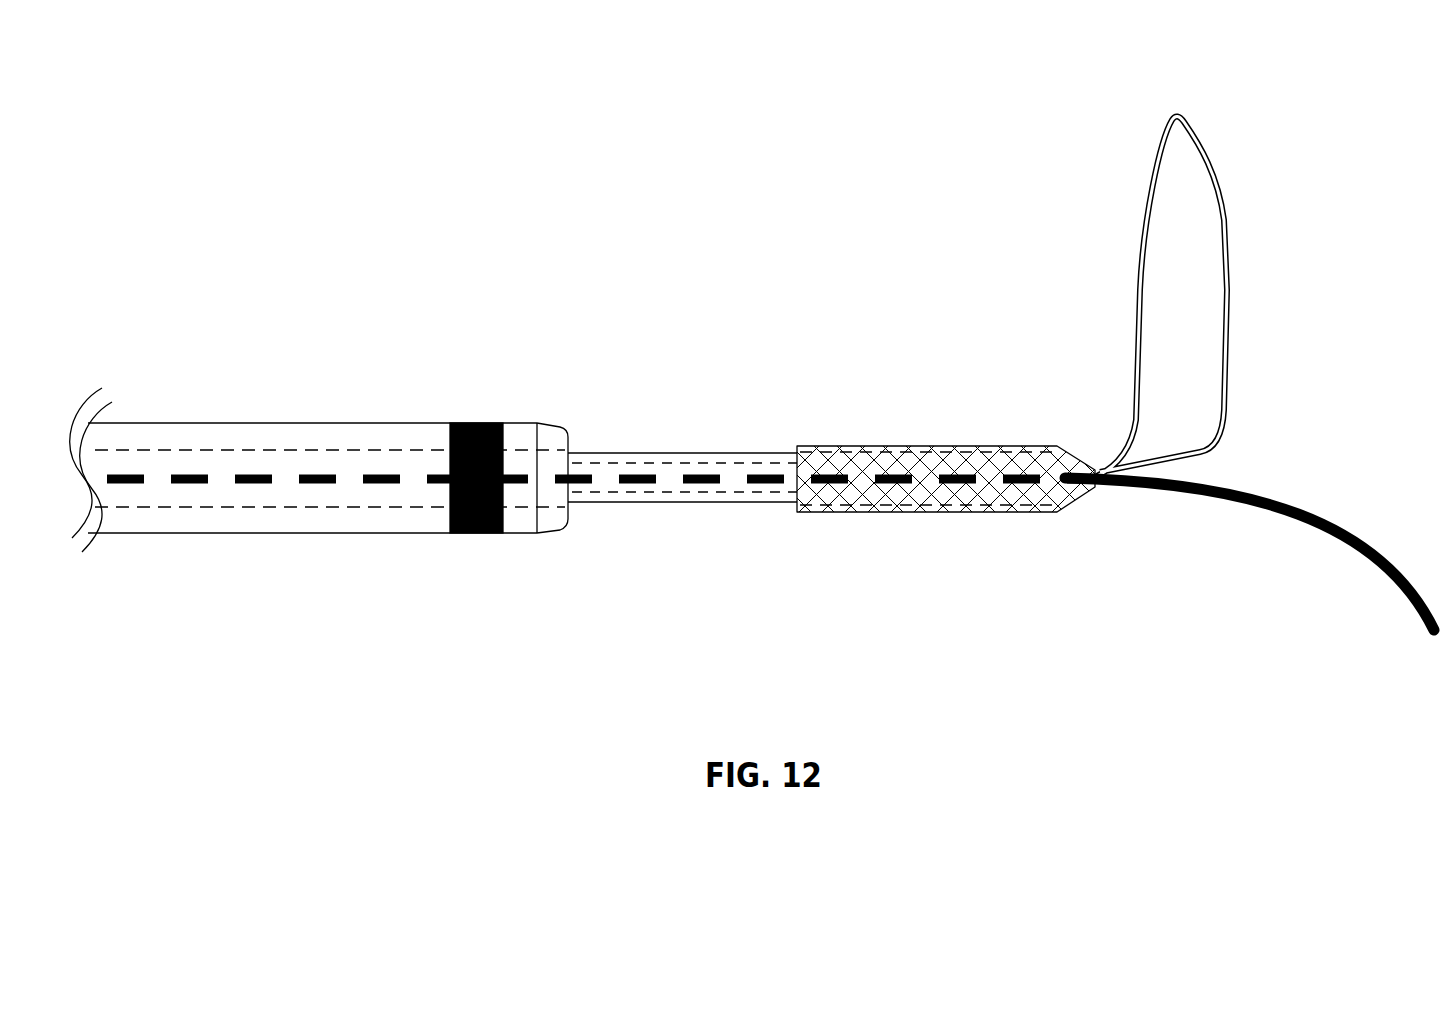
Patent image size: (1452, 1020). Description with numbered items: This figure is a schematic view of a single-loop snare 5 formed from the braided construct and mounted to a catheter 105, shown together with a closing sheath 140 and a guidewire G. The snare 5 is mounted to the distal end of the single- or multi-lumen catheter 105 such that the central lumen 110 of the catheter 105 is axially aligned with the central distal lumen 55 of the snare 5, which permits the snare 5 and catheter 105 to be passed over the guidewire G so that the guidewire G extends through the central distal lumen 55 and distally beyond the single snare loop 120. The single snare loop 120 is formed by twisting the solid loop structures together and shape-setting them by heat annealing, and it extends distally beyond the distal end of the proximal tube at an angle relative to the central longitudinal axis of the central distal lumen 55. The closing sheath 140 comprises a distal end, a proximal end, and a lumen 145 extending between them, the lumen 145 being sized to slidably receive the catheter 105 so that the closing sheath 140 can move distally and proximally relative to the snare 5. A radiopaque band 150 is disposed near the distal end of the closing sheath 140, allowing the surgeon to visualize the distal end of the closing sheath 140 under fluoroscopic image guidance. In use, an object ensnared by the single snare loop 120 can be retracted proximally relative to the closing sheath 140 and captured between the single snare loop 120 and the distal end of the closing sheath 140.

The snare 5 is at (883, 180).
The closing sheath 140 is at (233, 420).
The marker band 150 is at (470, 420).
The lumen 145 is at (287, 496).
The central lumen 110 is at (672, 484).
The catheter 105 is at (833, 514).
The central distal lumen 55 is at (980, 504).
The single snare loop 120 is at (1222, 185).
The guidewire G is at (1345, 518).